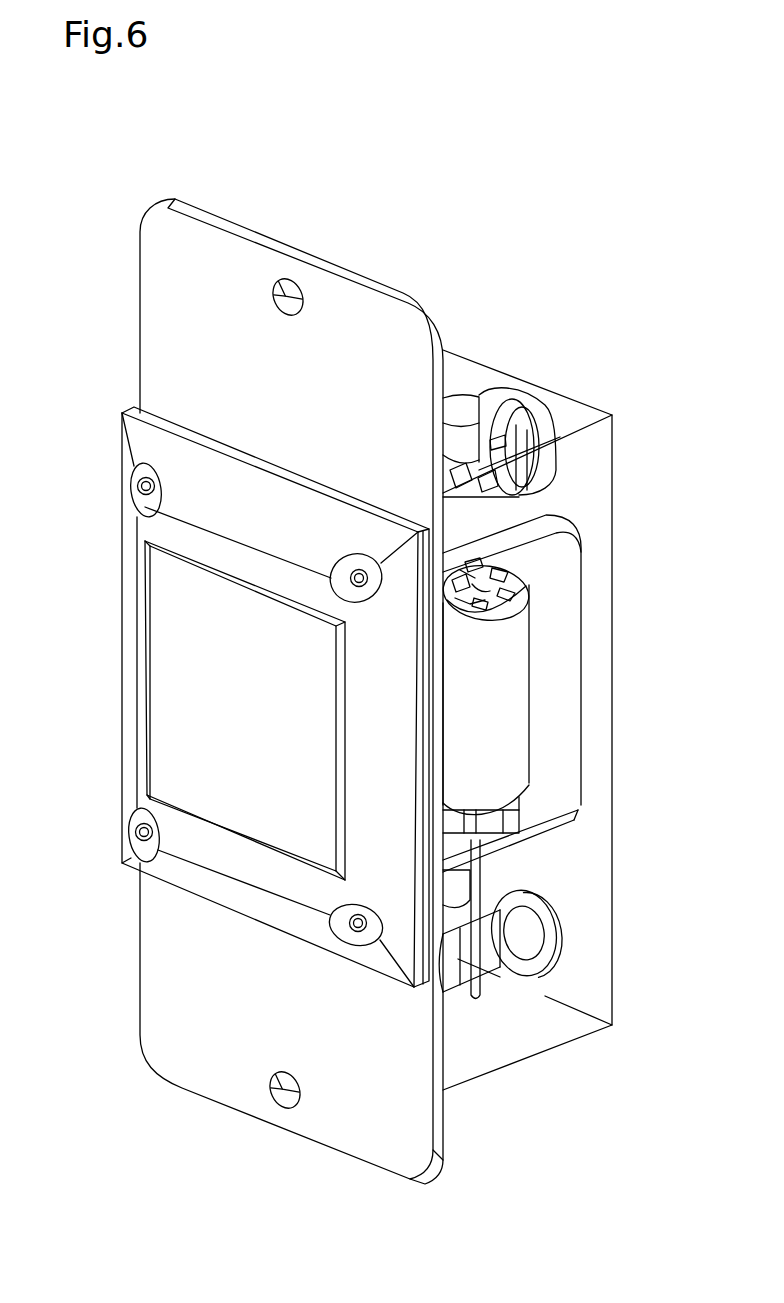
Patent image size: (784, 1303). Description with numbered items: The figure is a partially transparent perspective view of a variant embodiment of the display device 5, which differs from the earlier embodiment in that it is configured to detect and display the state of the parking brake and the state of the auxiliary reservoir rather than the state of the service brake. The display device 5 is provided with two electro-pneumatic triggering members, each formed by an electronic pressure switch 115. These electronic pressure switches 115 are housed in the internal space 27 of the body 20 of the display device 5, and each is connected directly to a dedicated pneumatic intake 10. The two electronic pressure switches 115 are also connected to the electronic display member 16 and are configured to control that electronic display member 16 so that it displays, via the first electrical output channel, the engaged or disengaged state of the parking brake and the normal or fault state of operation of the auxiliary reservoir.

The display device 5 is at (482, 273).
The electronic display member 16 is at (131, 680).
The electronic pressure switch 115 is at (490, 667).
The body 20 is at (612, 850).
The internal space 27 is at (582, 965).
The pneumatic intake 10 is at (473, 933).